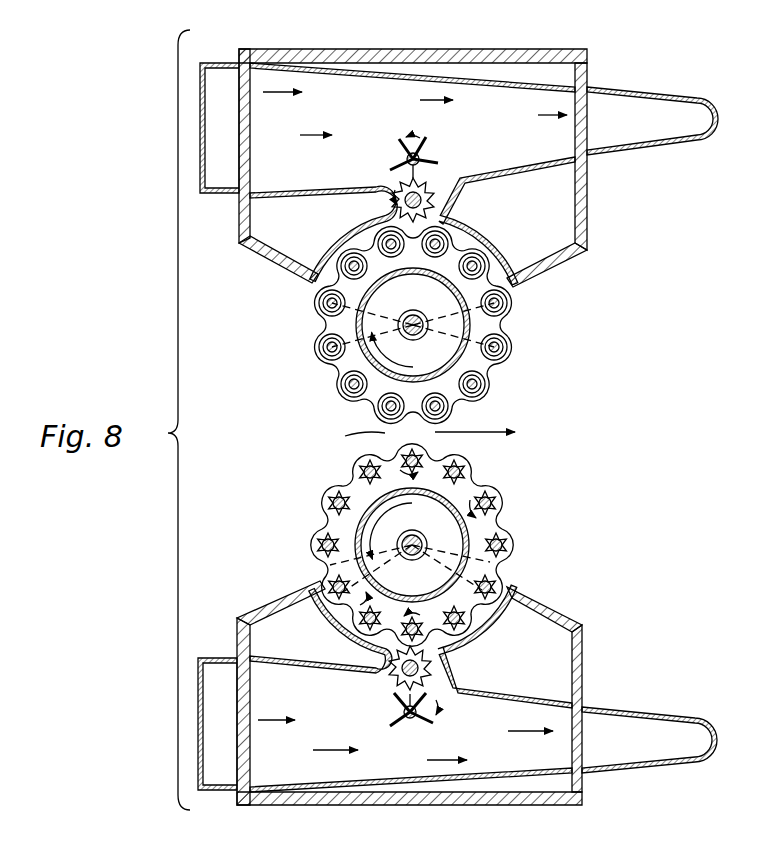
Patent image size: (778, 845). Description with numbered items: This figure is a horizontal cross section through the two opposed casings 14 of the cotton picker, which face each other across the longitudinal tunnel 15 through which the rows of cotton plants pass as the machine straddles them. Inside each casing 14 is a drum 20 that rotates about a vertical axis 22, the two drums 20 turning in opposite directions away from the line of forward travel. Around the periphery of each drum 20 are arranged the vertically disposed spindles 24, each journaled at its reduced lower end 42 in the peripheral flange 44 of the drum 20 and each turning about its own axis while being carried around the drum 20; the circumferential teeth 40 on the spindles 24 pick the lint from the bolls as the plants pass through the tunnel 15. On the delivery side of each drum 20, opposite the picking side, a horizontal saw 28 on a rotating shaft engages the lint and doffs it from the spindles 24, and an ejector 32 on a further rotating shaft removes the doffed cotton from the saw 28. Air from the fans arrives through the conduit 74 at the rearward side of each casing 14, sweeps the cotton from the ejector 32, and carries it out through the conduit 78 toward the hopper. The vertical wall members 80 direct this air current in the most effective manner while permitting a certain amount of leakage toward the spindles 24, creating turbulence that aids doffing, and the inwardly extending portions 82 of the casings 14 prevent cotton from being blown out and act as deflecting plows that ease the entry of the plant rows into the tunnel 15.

The casing 14 is at (490, 48).
The tunnel 15 is at (412, 426).
The drum 20 is at (466, 356).
The vertical axis 22 is at (413, 318).
The spindle 24 is at (500, 344).
The horizontal saw 28 is at (448, 190).
The ejector 32 is at (397, 147).
The circumferential teeth 40 is at (512, 543).
The lower end of spindle 42 is at (478, 384).
The peripheral flange 44 is at (500, 496).
The conduit 74 is at (222, 155).
The conduit 78 is at (665, 134).
The vertical wall member 80 is at (312, 186).
The inwardly extending portion 82 is at (280, 259).